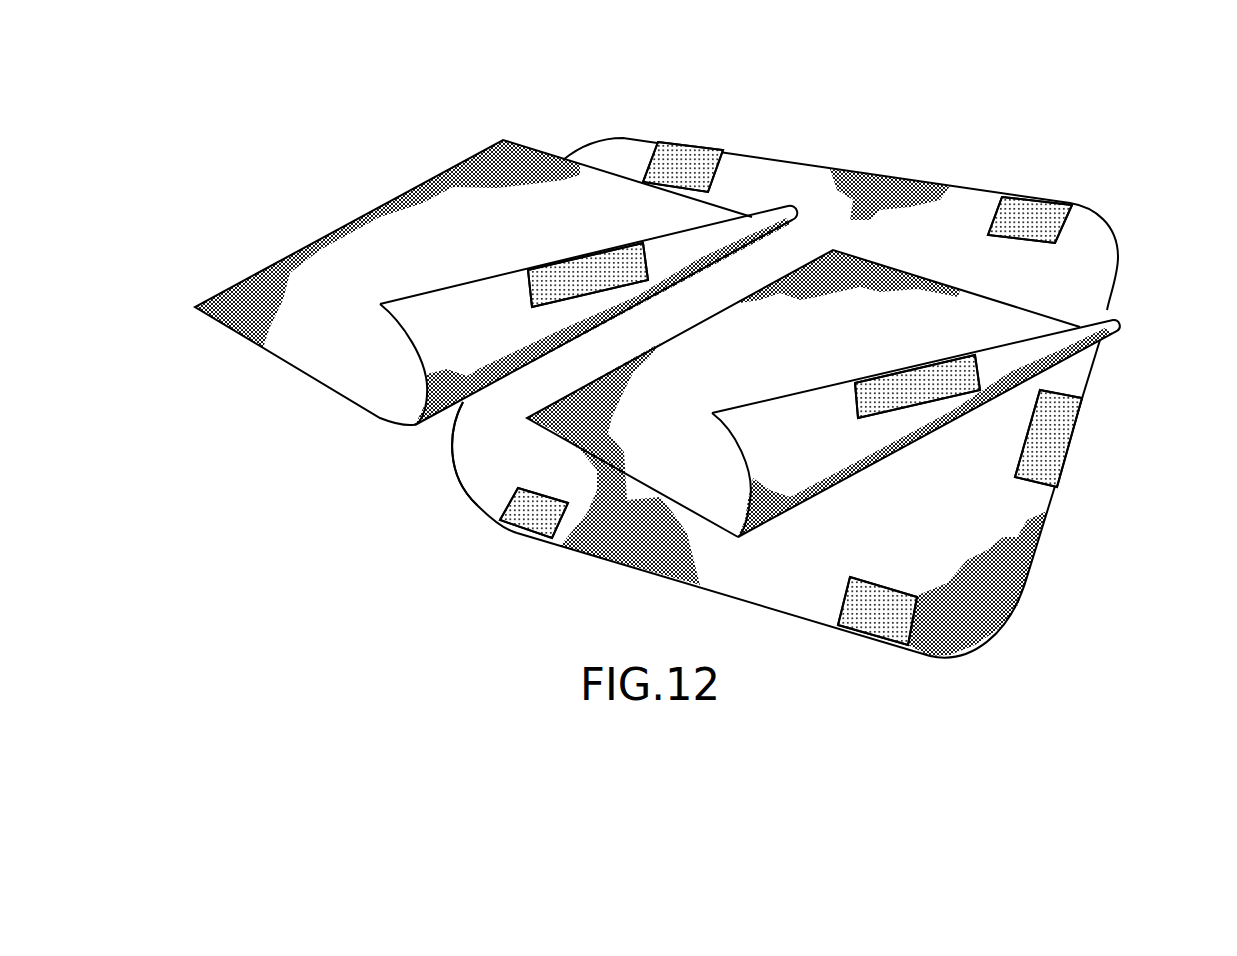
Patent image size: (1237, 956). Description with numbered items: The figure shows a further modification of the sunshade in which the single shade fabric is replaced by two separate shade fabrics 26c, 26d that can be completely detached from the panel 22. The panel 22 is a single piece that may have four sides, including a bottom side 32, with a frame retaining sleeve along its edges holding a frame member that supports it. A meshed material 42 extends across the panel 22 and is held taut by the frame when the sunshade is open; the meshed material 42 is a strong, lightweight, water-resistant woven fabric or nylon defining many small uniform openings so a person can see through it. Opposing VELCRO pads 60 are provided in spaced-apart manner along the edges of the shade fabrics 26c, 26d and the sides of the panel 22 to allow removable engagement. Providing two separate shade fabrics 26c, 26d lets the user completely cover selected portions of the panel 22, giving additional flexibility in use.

The panel 22 is at (805, 145).
The shade fabric 26c is at (517, 160).
The shade fabric 26d is at (1122, 323).
The VELCRO pad 60 is at (1045, 207).
The bottom side 32 is at (793, 613).
The meshed material 42 is at (508, 445).